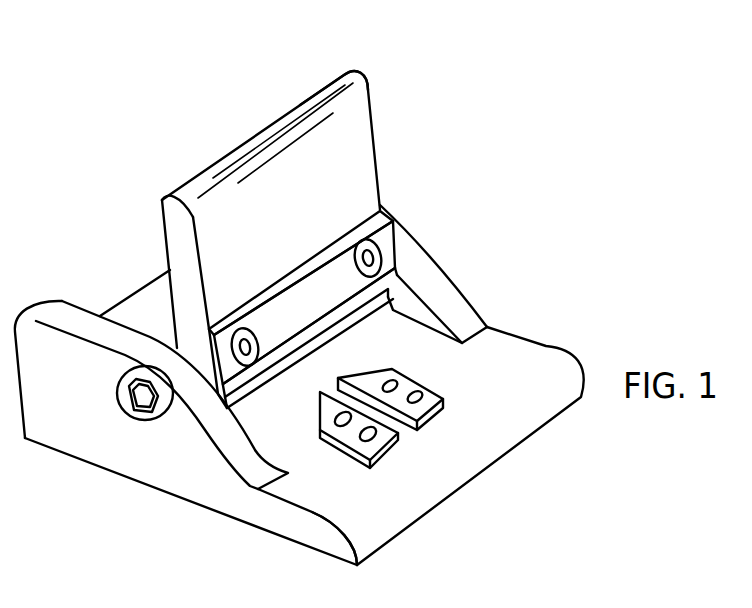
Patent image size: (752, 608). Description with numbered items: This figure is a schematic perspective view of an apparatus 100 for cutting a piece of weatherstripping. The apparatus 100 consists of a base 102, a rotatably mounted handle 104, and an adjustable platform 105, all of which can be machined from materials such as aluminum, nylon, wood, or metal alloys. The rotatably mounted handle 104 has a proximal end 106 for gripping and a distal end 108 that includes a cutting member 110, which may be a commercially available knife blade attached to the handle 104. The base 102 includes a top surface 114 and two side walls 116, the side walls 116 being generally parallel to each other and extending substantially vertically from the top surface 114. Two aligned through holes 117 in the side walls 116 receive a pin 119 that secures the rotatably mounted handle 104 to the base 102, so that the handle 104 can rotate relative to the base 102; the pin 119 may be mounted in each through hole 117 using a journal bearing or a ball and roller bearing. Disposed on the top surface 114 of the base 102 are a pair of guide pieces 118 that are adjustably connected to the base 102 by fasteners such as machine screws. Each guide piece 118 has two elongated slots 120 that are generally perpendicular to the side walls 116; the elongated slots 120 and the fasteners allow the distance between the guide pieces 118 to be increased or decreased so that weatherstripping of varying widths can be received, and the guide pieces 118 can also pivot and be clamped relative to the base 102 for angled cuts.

The apparatus 100 is at (262, 57).
The base 102 is at (450, 478).
The rotatably mounted handle 104 is at (375, 110).
The adjustable platform 105 is at (138, 298).
The proximal end 106 is at (347, 72).
The distal end 108 is at (393, 308).
The cutting member 110 is at (258, 400).
The top surface 114 is at (316, 497).
The side walls 116 is at (63, 398).
The through holes 117 is at (147, 415).
The guide pieces 118 is at (400, 437).
The pin 119 is at (121, 397).
The elongated slots 120 is at (400, 381).